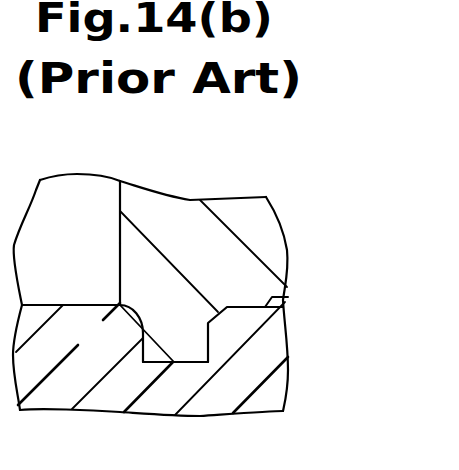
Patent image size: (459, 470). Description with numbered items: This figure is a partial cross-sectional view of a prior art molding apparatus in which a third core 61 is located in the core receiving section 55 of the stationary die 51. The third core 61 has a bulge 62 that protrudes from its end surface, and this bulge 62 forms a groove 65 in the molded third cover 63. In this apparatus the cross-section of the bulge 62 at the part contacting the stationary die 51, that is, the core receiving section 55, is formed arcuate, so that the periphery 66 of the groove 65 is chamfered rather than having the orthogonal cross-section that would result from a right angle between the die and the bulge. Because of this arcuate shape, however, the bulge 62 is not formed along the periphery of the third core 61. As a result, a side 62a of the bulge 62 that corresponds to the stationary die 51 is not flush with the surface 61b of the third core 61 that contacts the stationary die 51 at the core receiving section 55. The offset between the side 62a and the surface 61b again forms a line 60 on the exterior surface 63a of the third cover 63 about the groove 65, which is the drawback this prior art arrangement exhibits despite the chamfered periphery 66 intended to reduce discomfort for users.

The stationary die 51 is at (58, 184).
The core receiving section 55 is at (128, 192).
The third core 61 is at (238, 198).
The surface of the third core 61b is at (118, 232).
The line 60 is at (119, 303).
The periphery 66 is at (135, 315).
The side of the bulge 62a is at (143, 339).
The groove 65 is at (146, 350).
The bulge 62 is at (198, 361).
The exterior surface of the third cover 63a is at (285, 299).
The third cover 63 is at (50, 408).